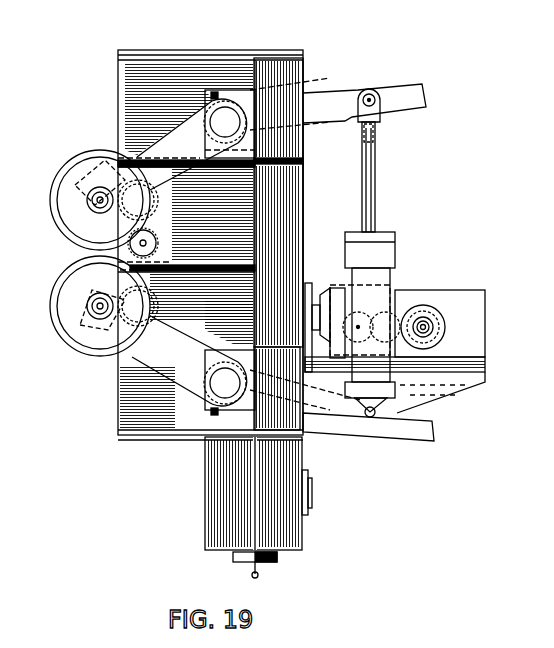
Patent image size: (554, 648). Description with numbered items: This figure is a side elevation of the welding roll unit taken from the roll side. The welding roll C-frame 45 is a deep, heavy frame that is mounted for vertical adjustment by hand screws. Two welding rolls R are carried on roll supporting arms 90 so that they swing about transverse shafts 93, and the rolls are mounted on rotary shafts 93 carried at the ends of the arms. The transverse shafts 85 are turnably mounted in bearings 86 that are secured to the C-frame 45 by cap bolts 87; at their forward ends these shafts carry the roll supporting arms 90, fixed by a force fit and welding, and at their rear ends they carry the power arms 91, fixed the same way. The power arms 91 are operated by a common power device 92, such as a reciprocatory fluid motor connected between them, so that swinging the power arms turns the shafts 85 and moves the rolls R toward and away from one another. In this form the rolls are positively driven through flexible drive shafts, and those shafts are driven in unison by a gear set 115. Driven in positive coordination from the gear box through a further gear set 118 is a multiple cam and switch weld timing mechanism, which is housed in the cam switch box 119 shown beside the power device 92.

The welding roll C-frame 45 is at (305, 72).
The welding rolls R is at (65, 195).
The transverse shafts 93 is at (98, 204).
The gear set 115 is at (160, 246).
The roll supporting arms 90 is at (175, 135).
The transverse shafts 85 is at (228, 118).
The bearings 86 is at (225, 93).
The cap bolts 87 is at (214, 92).
The power arms 91 is at (328, 100).
The power device 92 is at (390, 278).
The gear set 118 is at (428, 308).
The cam switch box 119 is at (470, 292).